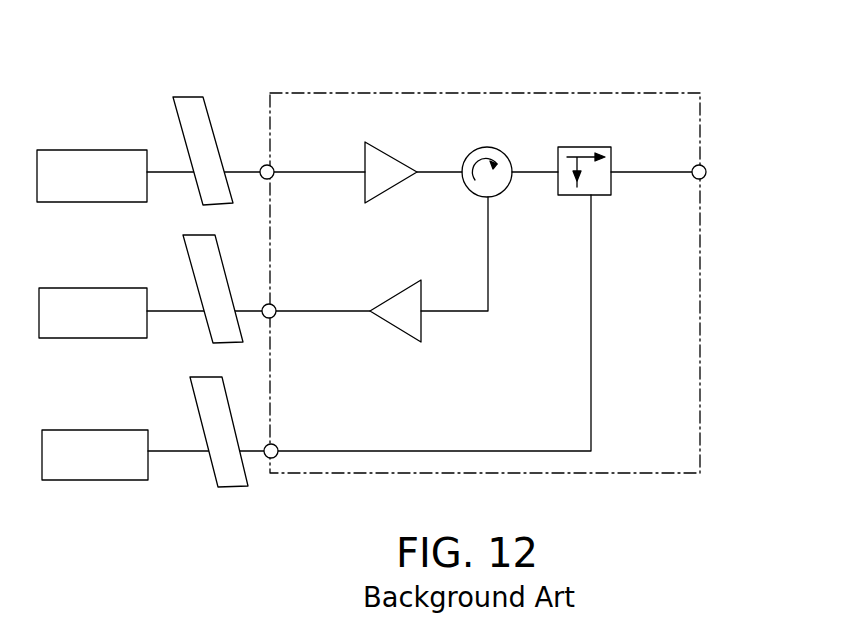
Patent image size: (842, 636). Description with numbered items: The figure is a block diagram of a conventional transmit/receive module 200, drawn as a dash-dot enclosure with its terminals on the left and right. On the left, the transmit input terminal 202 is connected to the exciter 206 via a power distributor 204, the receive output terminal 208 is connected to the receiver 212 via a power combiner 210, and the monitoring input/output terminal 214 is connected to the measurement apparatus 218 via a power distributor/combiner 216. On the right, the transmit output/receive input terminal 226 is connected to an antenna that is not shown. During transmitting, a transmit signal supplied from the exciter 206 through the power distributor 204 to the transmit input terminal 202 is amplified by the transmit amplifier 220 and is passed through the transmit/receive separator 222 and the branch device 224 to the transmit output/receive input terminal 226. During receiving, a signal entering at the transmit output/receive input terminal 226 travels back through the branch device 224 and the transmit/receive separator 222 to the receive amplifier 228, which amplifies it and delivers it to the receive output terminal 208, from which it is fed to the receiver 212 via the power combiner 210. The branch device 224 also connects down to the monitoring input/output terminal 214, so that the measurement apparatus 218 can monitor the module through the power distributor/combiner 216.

The transmit/receive module 200 is at (432, 77).
The transmit input terminal 202 is at (269, 165).
The power distributor 204 is at (193, 97).
The exciter 206 is at (92, 150).
The receive output terminal 208 is at (271, 304).
The power combiner 210 is at (243, 339).
The receiver 212 is at (92, 288).
The monitoring input/output terminal 214 is at (272, 444).
The power distributor/combiner 216 is at (232, 487).
The measurement apparatus 218 is at (93, 430).
The transmit amplifier 220 is at (386, 154).
The transmit/receive separator 222 is at (505, 154).
The branch device 224 is at (580, 147).
The transmit output/receive input terminal 226 is at (703, 166).
The receive amplifier 228 is at (407, 288).